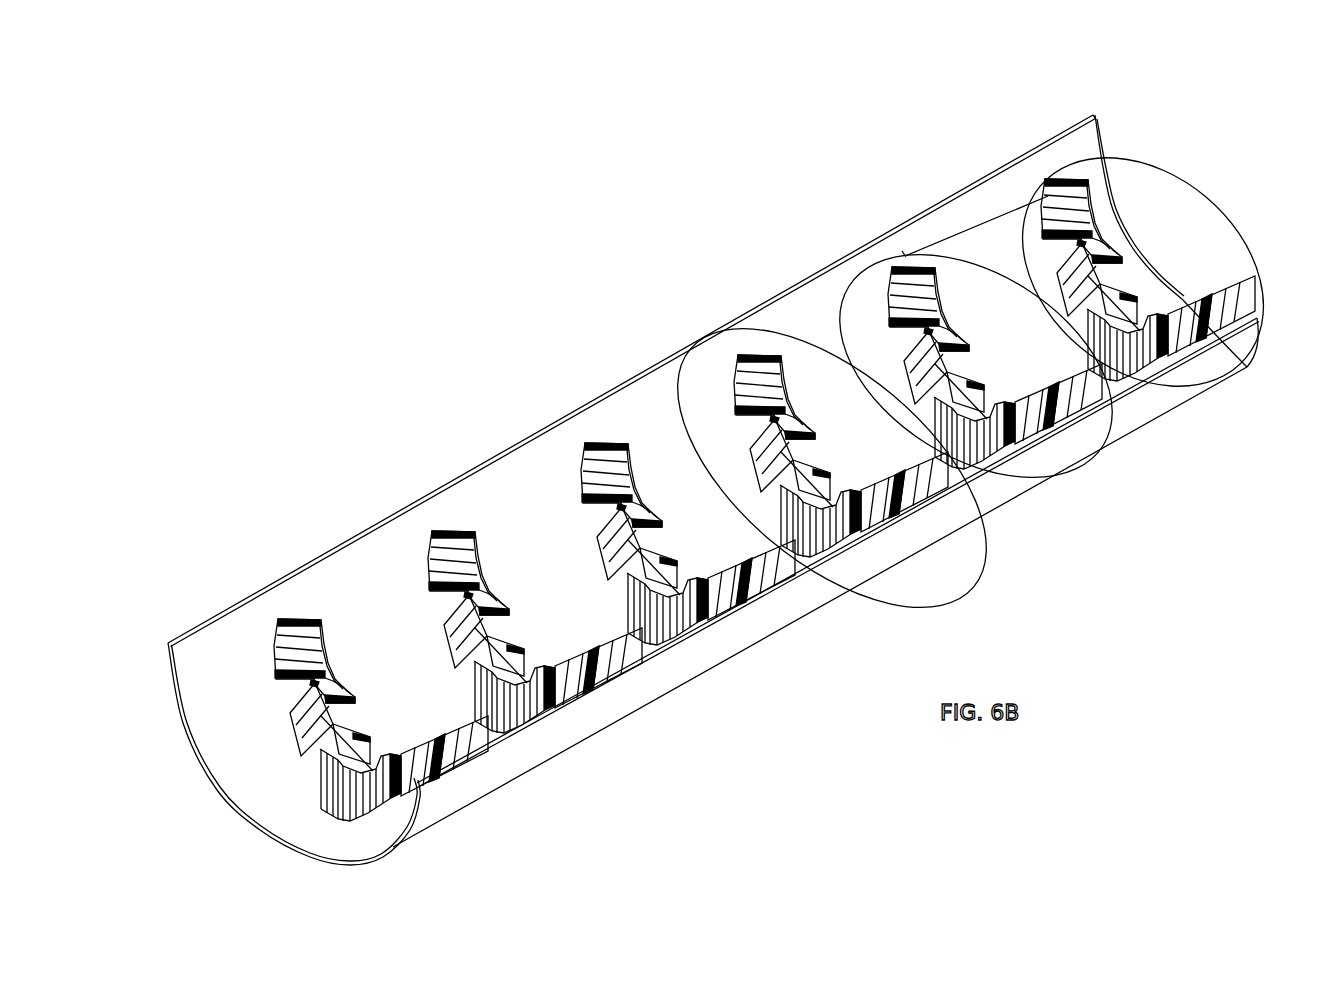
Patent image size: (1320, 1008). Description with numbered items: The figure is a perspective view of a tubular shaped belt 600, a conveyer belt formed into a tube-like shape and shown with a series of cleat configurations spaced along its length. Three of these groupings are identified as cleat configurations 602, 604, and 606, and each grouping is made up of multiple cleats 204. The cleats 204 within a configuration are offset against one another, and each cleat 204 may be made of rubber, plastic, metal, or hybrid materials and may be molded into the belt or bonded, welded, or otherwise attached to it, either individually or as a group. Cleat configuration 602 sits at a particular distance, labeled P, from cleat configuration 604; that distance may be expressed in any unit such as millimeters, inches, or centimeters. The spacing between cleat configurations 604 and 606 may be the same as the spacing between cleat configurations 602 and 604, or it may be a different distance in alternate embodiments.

The tubular shaped belt 600 is at (446, 113).
The cleat configuration 602 is at (1068, 263).
The cleat configuration 604 is at (891, 349).
The cleat configuration 606 is at (733, 454).
The cleat 204 is at (1148, 254).